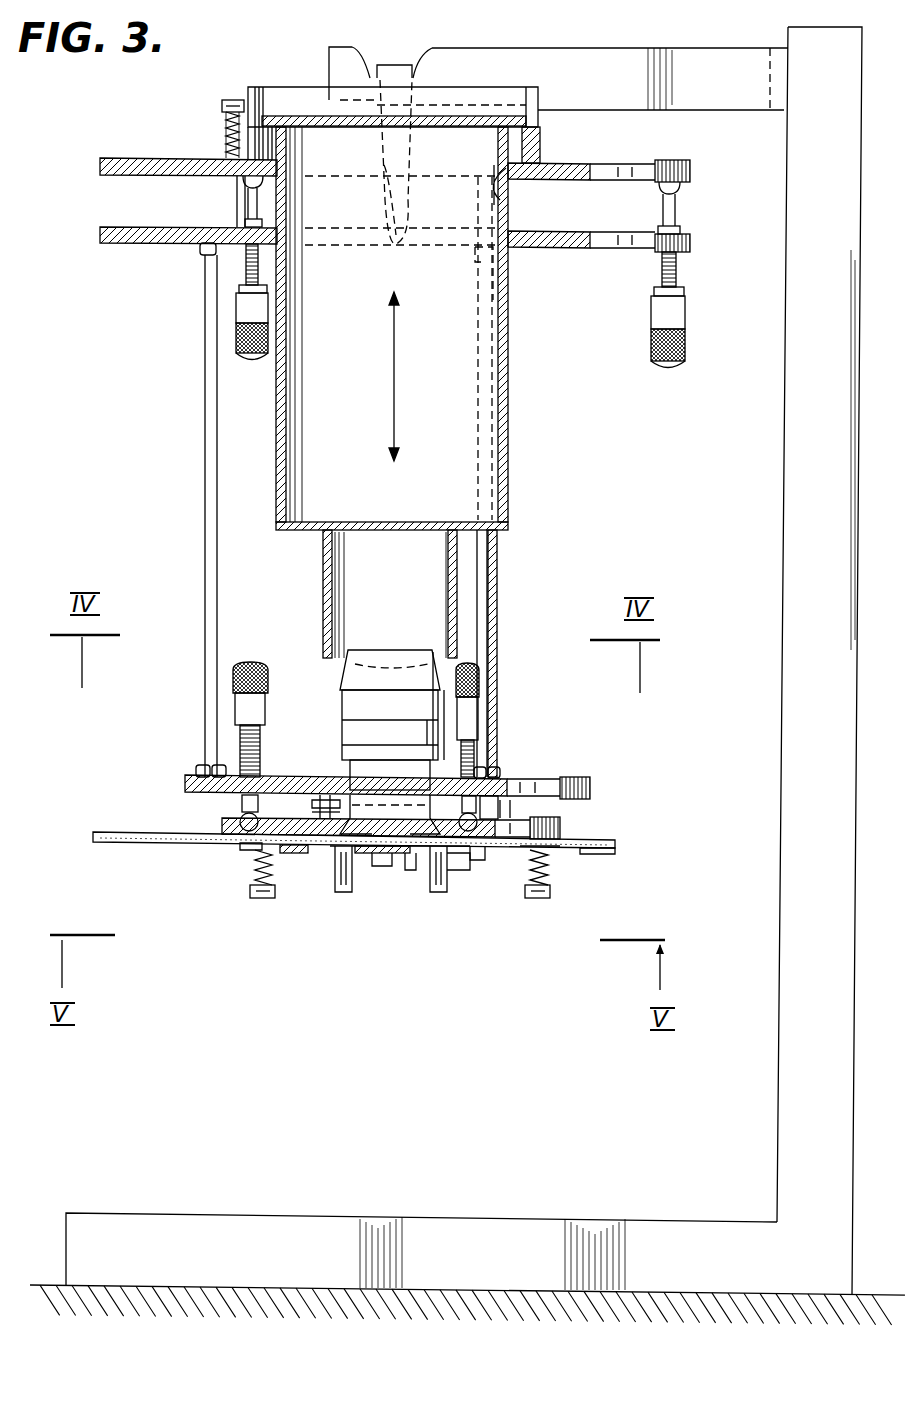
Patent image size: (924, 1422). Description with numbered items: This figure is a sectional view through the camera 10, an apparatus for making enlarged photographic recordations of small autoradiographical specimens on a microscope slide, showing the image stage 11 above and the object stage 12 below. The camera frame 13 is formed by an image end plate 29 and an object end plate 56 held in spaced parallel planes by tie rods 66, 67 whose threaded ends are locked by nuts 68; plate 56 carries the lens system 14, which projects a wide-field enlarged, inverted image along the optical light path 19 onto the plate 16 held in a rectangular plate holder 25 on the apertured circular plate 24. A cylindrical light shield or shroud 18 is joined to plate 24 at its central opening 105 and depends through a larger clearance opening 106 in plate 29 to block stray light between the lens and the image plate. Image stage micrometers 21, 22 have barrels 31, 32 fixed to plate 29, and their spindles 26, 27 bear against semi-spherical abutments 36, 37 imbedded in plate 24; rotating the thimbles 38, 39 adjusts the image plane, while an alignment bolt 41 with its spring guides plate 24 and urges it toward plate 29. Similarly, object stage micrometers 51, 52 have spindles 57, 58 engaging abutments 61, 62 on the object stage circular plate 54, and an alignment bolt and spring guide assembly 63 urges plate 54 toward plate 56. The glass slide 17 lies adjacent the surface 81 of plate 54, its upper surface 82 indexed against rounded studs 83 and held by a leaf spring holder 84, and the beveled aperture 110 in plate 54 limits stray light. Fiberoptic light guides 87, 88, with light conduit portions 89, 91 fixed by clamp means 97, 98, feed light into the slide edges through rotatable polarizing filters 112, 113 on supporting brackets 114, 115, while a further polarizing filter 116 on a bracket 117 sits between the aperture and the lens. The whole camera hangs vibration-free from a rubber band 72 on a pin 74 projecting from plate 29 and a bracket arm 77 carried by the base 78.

The camera 10 is at (458, 345).
The image stage 11 is at (381, 421).
The object stage 12 is at (474, 809).
The camera frame 13 is at (347, 762).
The lens system 14 is at (338, 692).
The plate 16 is at (305, 88).
The glass slide 17 is at (400, 854).
The light shield or shroud 18 is at (460, 572).
The optical light path 19 is at (398, 385).
The micrometer 21 is at (185, 332).
The micrometer 22 is at (674, 275).
The apertured circular plate 24 is at (662, 162).
The rectangular plate holder 25 is at (530, 140).
The spindle 26 is at (250, 207).
The spindle 27 is at (662, 207).
The image end plate 29 is at (118, 232).
The barrel 31 is at (246, 272).
The barrel 32 is at (662, 277).
The abutment 36 is at (243, 182).
The abutment 37 is at (680, 189).
The thimble 38 is at (252, 362).
The thimble 39 is at (678, 322).
The alignment bolt 41 is at (228, 102).
The micrometer 51 is at (272, 655).
The micrometer 52 is at (472, 655).
The object stage circular plate 54 is at (560, 830).
The object end plate 56 is at (585, 779).
The spindle 57 is at (242, 805).
The spindle 58 is at (496, 800).
The abutment 61 is at (244, 830).
The abutment 62 is at (508, 800).
The alignment bolt and spring guide assembly 63 is at (528, 880).
The tie rod 66 is at (205, 497).
The tie rod 67 is at (484, 582).
The nut 68 is at (200, 250).
The rubber band 72 is at (395, 65).
The pin 74 is at (392, 250).
The bracket arm 77 is at (538, 48).
The base 78 is at (808, 537).
The surface 81 is at (246, 852).
The upper surface 82 is at (378, 834).
The stud 83 is at (412, 872).
The leaf spring holder 84 is at (384, 866).
The fiberoptic light guide 87 is at (300, 856).
The fiberoptic light guide 88 is at (474, 862).
The light conduit portion 89 is at (110, 833).
The light conduit portion 91 is at (597, 854).
The clamp means 97 is at (288, 852).
The clamp means 98 is at (550, 870).
The central opening 105 is at (500, 175).
The clearance opening 106 is at (510, 246).
The aperture 110 is at (412, 834).
The polarizing filter 112 is at (350, 894).
The polarizing filter 113 is at (440, 894).
The supporting bracket 114 is at (326, 857).
The supporting bracket 115 is at (462, 872).
The polarizing filter 116 is at (322, 800).
The bracket 117 is at (318, 808).